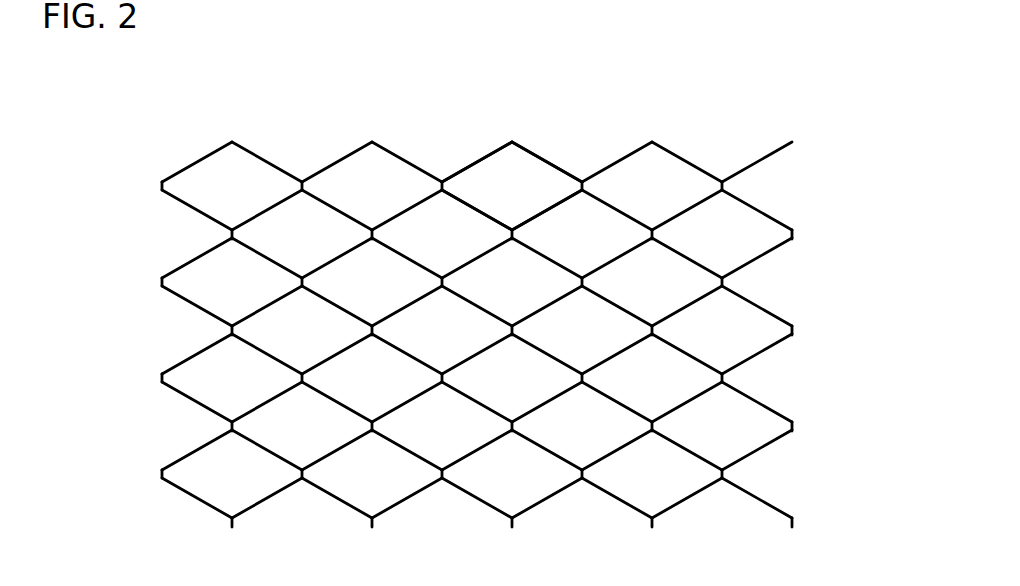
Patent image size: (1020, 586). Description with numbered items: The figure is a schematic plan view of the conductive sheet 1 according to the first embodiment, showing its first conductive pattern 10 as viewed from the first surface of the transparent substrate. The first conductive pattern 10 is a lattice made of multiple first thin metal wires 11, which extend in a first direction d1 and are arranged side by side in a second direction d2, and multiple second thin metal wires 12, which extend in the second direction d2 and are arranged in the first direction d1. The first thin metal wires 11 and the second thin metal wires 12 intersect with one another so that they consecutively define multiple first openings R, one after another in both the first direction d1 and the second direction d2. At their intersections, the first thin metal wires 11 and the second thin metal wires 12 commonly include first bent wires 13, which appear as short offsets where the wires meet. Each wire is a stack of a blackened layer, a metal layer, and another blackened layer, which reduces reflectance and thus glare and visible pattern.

The conductive sheet 1 is at (313, 111).
The first conductive pattern 10 is at (567, 131).
The first thin metal wires 11 is at (768, 160).
The second thin metal wires 12 is at (775, 315).
The first bent wires 13 is at (726, 282).
The first openings R is at (505, 185).
The first direction d1 is at (802, 578).
The second direction d2 is at (802, 578).